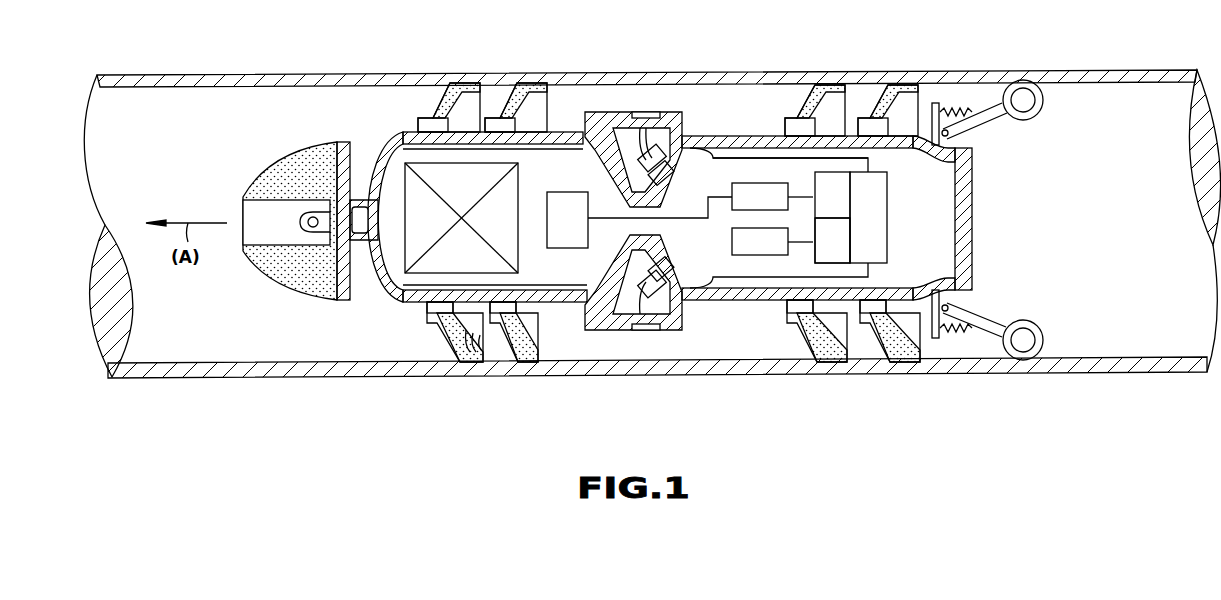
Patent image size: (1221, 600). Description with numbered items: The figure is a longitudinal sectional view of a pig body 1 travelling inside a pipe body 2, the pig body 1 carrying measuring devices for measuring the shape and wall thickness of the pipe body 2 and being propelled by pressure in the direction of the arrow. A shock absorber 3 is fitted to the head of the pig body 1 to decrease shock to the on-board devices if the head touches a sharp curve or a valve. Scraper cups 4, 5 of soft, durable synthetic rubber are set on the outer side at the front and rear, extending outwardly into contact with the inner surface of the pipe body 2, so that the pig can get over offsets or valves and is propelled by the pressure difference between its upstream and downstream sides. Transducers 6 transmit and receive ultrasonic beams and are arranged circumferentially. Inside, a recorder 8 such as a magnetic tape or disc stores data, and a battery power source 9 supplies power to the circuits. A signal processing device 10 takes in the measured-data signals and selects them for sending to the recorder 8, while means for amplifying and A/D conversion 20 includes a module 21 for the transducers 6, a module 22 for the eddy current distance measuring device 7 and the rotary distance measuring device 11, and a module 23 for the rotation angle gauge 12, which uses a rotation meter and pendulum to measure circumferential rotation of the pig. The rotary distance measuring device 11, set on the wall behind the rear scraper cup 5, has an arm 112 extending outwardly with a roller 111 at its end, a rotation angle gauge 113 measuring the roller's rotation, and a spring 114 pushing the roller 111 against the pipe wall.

The pig body 1 is at (729, 315).
The pipe body 2 is at (582, 378).
The shock absorber 3 is at (285, 283).
The scraper cup 4 is at (505, 330).
The scraper cup 5 is at (878, 347).
The transducer 6 is at (643, 112).
The eddy current distance measuring device 7 is at (445, 335).
The recorder 8 is at (585, 250).
The battery power source 9 is at (437, 262).
The signal processing device 10 is at (742, 183).
The rotary distance measuring device 11 is at (1030, 188).
The rotation angle gauge 12 is at (732, 240).
The means for amplifying and A/D conversion 20 is at (896, 199).
The module 21 is at (880, 245).
The module 22 is at (812, 190).
The module 23 is at (832, 250).
The roller 111 is at (1045, 102).
The arm 112 is at (985, 130).
The rotation angle gauge 113 is at (1023, 88).
The spring 114 is at (960, 107).